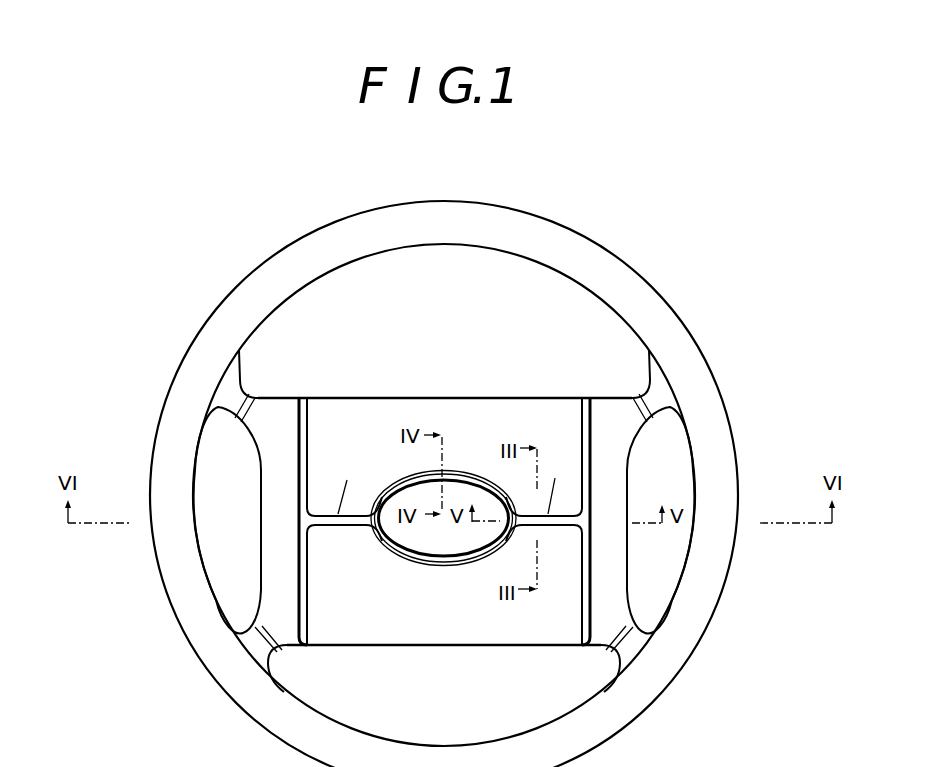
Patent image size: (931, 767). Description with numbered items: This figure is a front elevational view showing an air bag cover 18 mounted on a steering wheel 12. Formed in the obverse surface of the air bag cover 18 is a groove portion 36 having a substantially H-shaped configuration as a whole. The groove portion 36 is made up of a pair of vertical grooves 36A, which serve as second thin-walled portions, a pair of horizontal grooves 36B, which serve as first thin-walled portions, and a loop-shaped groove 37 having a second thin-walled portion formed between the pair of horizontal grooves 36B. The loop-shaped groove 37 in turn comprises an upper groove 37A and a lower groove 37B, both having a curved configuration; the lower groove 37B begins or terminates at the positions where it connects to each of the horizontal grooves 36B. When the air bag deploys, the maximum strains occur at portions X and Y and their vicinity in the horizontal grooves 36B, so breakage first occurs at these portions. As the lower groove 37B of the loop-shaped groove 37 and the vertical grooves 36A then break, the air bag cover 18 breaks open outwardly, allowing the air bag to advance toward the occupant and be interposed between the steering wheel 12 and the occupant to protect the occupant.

The steering wheel 12 is at (690, 321).
The air bag cover 18 is at (461, 399).
The groove portion 36 is at (444, 503).
The vertical grooves 36A is at (303, 434).
The horizontal grooves 36B is at (320, 527).
The loop-shaped groove 37 is at (431, 510).
The upper groove 37A is at (467, 471).
The lower groove 37B is at (440, 564).
The portion X is at (346, 486).
The portion Y is at (555, 485).